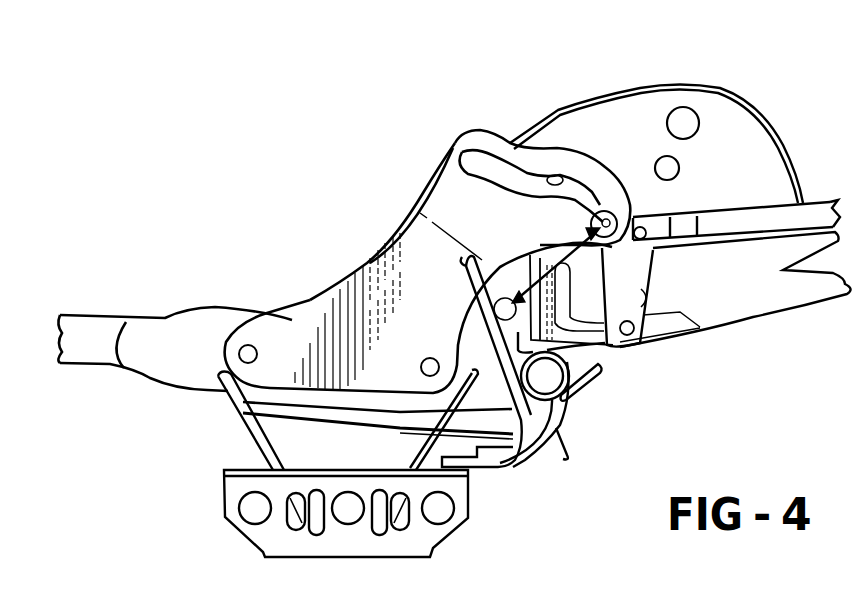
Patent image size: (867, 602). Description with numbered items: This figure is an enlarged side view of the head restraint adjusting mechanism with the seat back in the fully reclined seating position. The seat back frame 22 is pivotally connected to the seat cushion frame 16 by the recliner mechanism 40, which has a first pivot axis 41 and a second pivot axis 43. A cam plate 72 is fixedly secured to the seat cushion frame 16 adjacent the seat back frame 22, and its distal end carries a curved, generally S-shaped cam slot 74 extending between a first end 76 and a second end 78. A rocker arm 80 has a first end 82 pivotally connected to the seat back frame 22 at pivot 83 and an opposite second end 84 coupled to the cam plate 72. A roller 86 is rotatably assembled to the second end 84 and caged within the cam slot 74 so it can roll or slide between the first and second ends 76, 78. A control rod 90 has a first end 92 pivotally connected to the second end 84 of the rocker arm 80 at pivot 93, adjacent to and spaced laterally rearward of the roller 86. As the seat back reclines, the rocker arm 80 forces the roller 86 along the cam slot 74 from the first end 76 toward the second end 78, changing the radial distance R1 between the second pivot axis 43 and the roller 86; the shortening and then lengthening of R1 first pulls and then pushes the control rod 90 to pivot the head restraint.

The seat cushion frame 16 is at (105, 332).
The seat back frame 22 is at (793, 316).
The recliner mechanism 40 is at (755, 121).
The first pivot axis 41 is at (685, 114).
The second pivot axis 43 is at (490, 320).
The cam plate 72 is at (308, 298).
The cam slot 74 is at (550, 178).
The first end 76 is at (470, 156).
The second end 78 is at (644, 158).
The rocker arm 80 is at (653, 276).
The first end 82 is at (640, 328).
The pivot 83 is at (634, 362).
The second end 84 is at (706, 189).
The roller 86 is at (582, 217).
The control rod 90 is at (804, 201).
The first end 92 is at (648, 233).
The pivot 93 is at (752, 189).
The radial distance R1 is at (524, 268).